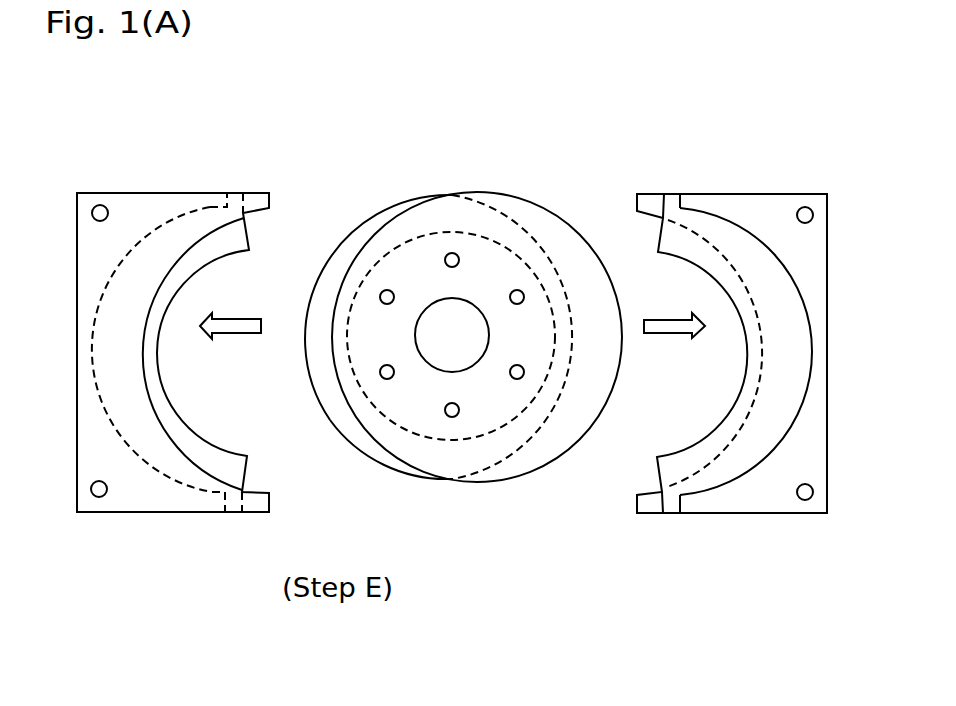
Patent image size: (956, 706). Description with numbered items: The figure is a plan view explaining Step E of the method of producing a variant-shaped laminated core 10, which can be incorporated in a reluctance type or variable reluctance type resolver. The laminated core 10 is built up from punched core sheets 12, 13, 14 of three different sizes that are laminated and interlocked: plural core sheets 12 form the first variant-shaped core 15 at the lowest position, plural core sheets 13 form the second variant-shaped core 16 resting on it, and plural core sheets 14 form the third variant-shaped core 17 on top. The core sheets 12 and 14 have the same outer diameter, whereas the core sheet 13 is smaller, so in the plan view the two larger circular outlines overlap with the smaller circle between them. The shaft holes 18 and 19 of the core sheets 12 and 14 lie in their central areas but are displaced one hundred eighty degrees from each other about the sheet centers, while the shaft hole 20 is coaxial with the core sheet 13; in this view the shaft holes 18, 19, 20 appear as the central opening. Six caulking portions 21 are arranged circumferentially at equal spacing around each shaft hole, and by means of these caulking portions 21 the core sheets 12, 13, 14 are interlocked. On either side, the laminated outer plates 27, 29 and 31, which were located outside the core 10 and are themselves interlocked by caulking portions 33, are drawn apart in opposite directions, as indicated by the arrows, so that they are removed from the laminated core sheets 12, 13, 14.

The variant-shaped laminated core 10 is at (562, 137).
The core sheet 12 is at (436, 367).
The core sheet 13 is at (472, 423).
The core sheet 14 is at (477, 373).
The first variant-shaped core 15 is at (338, 450).
The second variant-shaped core 16 is at (430, 446).
The third variant-shaped core 17 is at (527, 470).
The shaft hole 18 is at (452, 335).
The shaft hole 19 is at (459, 239).
The shaft hole 20 is at (433, 302).
The caulking portion 21 is at (382, 291).
The outer plate 27 is at (210, 197).
The outer plate 29 is at (245, 238).
The outer plate 31 is at (198, 309).
The caulking portion 33 is at (101, 205).